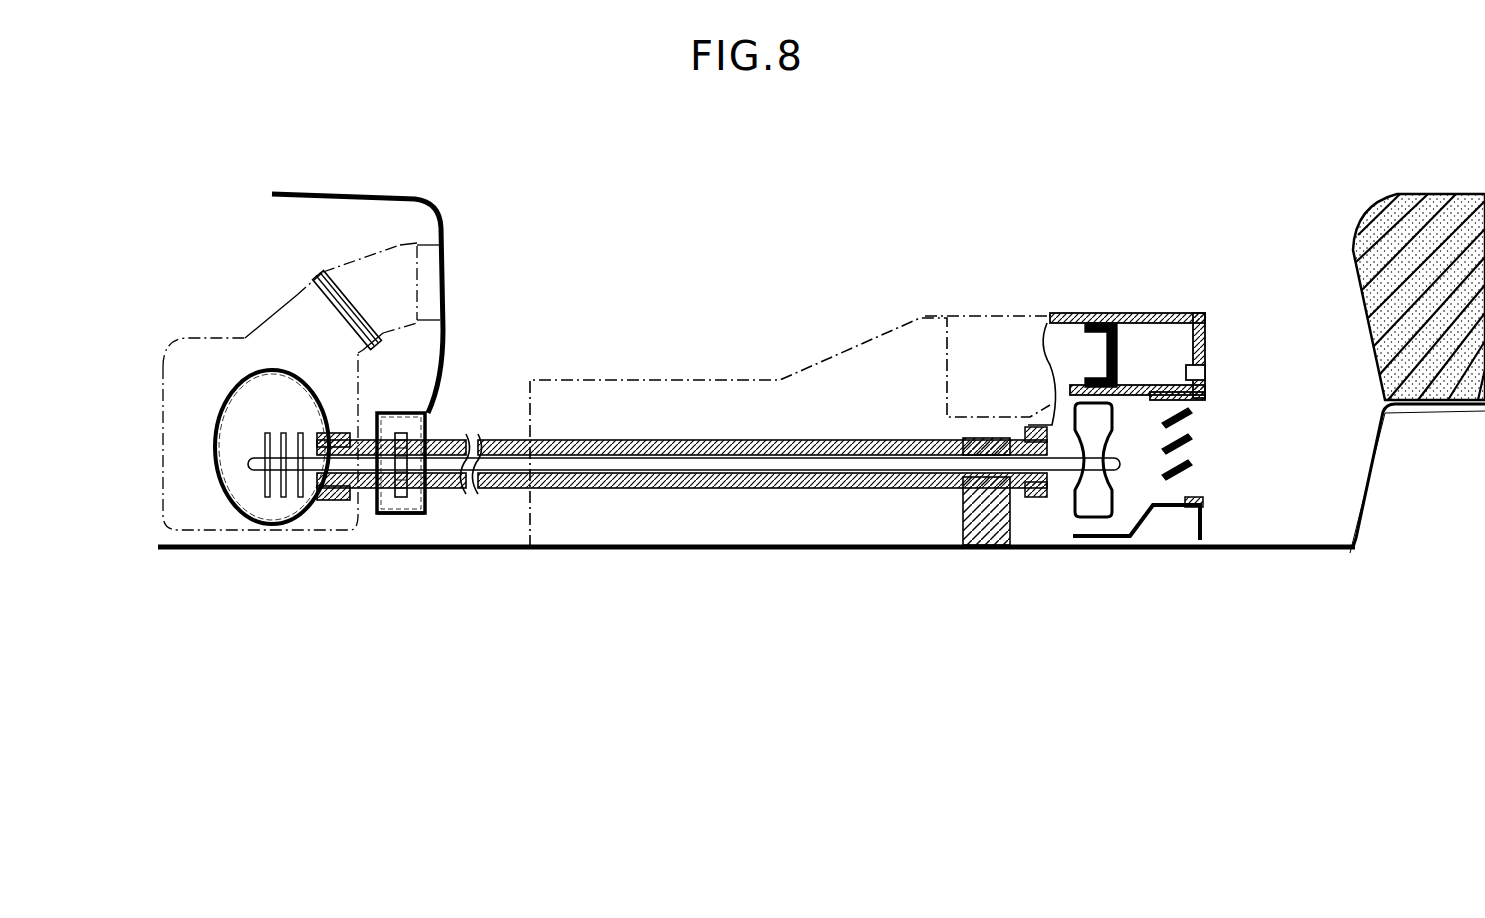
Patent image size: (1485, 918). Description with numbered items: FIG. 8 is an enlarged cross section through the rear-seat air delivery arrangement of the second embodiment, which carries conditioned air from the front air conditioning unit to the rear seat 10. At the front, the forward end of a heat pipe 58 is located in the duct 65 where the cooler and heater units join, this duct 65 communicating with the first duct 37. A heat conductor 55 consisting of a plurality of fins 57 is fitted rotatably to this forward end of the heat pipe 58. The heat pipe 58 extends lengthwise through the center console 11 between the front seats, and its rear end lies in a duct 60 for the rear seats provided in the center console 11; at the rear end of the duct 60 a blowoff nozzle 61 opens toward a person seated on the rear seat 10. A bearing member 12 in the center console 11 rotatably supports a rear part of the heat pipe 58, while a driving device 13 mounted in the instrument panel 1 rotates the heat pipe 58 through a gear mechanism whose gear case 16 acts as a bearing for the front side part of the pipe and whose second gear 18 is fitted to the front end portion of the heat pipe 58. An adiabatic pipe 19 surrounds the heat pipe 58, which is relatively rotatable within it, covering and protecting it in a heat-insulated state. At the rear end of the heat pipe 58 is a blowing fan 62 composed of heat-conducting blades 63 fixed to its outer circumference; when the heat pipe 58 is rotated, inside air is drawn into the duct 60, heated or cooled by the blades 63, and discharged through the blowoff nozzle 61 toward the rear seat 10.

The instrument panel 1 is at (432, 202).
The rear seat 10 is at (1368, 210).
The center console 11 is at (740, 378).
The bearing member 12 is at (960, 505).
The driving device 13 is at (385, 530).
The gear case 16 is at (425, 510).
The second gear 18 is at (400, 503).
The adiabatic pipe 19 is at (641, 488).
The first duct 37 is at (290, 290).
The heat conductor 55 is at (263, 503).
The fins 57 is at (300, 497).
The heat pipe 58 is at (652, 462).
The duct 60 is at (1120, 380).
The blowoff nozzle 61 is at (1212, 437).
The blowing fan 62 is at (1100, 518).
The blades 63 is at (1088, 422).
The duct 65 is at (215, 481).